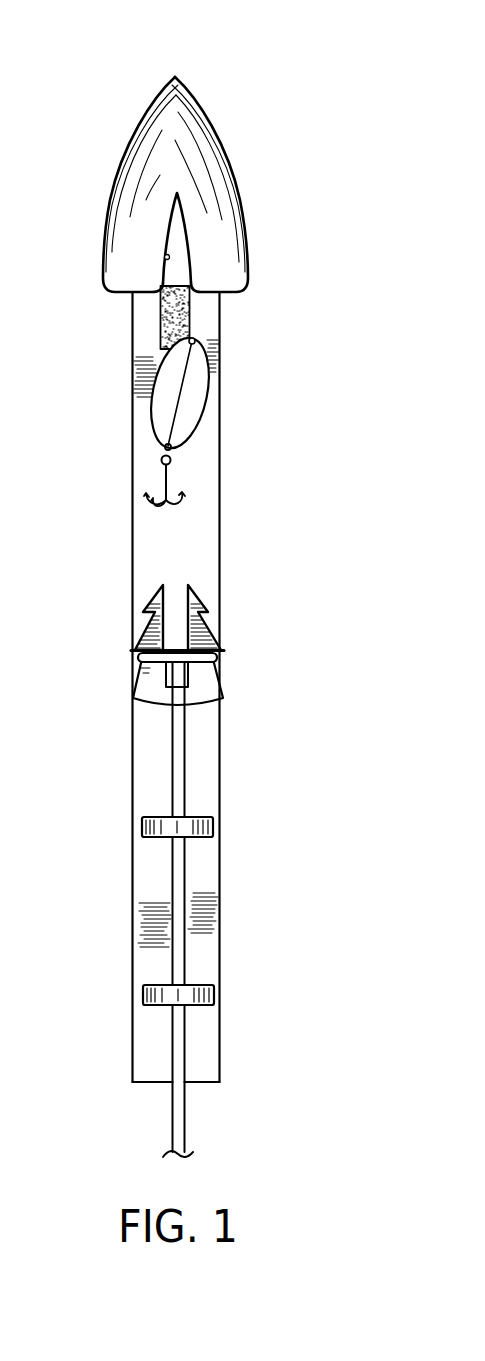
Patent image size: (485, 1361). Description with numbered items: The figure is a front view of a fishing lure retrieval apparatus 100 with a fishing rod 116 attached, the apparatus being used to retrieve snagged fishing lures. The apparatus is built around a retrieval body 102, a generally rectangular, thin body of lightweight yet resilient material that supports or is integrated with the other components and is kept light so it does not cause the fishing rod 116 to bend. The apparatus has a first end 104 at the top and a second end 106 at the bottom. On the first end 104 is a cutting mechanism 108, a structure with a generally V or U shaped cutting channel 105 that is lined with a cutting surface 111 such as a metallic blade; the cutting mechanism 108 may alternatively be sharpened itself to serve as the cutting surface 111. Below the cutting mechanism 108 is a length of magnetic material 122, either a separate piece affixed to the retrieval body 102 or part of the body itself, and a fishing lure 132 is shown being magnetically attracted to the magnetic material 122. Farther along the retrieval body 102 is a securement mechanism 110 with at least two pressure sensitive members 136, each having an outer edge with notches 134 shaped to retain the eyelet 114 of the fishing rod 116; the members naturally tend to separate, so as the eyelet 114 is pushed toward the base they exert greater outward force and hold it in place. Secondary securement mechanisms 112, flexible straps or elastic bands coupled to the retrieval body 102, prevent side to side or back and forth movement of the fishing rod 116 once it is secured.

The fishing lure retrieval apparatus 100 is at (290, 25).
The retrieval body 102 is at (114, 530).
The first end 104 is at (129, 89).
The cutting channel 105 is at (178, 276).
The second end 106 is at (260, 1114).
The cutting mechanism 108 is at (265, 202).
The securement mechanism 110 is at (150, 625).
The cutting surface 111 is at (165, 255).
The secondary securement mechanism 112 is at (213, 827).
The eyelet 114 is at (138, 657).
The fishing rod 116 is at (173, 1117).
The magnetic material 122 is at (176, 332).
The fishing lure 132 is at (197, 405).
The notches 134 is at (216, 600).
The pressure sensitive members 136 is at (204, 632).